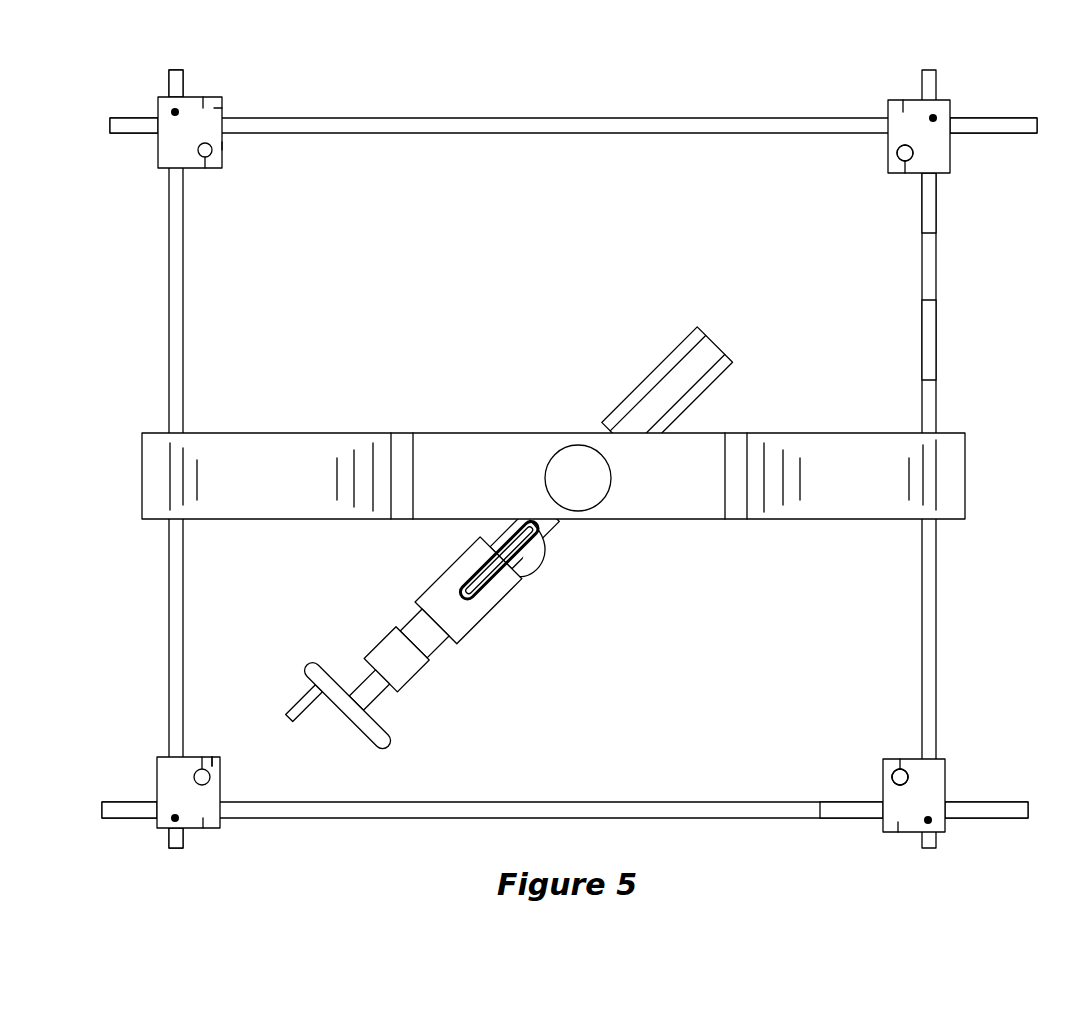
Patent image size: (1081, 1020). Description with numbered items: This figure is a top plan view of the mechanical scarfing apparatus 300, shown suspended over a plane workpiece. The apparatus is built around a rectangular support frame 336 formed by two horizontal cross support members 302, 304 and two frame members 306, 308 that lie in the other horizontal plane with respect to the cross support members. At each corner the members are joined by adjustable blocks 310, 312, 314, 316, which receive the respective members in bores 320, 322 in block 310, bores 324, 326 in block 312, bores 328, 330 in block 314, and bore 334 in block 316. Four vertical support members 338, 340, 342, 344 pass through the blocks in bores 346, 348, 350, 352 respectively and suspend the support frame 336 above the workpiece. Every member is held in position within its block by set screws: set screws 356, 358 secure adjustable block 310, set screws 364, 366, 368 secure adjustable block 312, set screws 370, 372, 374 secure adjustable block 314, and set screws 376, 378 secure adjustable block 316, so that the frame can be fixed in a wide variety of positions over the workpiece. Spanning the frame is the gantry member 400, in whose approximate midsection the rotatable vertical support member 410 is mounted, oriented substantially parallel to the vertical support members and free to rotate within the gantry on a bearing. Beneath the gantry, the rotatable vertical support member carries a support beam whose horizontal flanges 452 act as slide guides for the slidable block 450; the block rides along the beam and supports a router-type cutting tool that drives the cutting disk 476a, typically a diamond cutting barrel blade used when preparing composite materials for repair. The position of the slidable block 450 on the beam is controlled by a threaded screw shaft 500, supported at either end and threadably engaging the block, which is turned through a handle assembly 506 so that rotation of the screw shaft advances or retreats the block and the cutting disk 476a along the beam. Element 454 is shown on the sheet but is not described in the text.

The mechanical scarfing apparatus 300 is at (703, 72).
The horizontal cross support member 302 is at (657, 803).
The horizontal cross support member 304 is at (495, 130).
The frame member 306 is at (168, 605).
The frame member 308 is at (937, 348).
The adjustable block 310 is at (217, 792).
The adjustable block 312 is at (888, 828).
The adjustable block 314 is at (890, 110).
The adjustable block 316 is at (222, 110).
The bore 320 is at (152, 823).
The bore 322 is at (190, 835).
The bore 324 is at (955, 833).
The bore 326 is at (872, 820).
The bore 328 is at (962, 110).
The bore 330 is at (962, 146).
The bore 334 is at (149, 147).
The support frame 336 is at (152, 92).
The vertical support member 338 is at (207, 762).
The vertical support member 340 is at (888, 772).
The vertical support member 342 is at (898, 156).
The vertical support member 344 is at (212, 155).
The bore 346 is at (216, 754).
The bore 348 is at (885, 779).
The bore 350 is at (890, 152).
The bore 352 is at (225, 147).
The set screw 356 is at (203, 830).
The set screw 358 is at (203, 757).
The set screw 364 is at (897, 835).
The set screw 366 is at (930, 818).
The set screw 368 is at (900, 760).
The set screw 370 is at (905, 173).
The set screw 372 is at (897, 107).
The set screw 374 is at (936, 116).
The set screw 376 is at (212, 98).
The set screw 378 is at (175, 112).
The gantry member 400 is at (812, 505).
The rotatable vertical support member 410 is at (562, 452).
The slidable block 450 is at (468, 632).
The horizontal flange 452 is at (563, 533).
The locking collar 454 is at (407, 618).
The cutting disk 476a is at (487, 525).
The screw shaft 500 is at (373, 680).
The handle assembly 506 is at (388, 742).